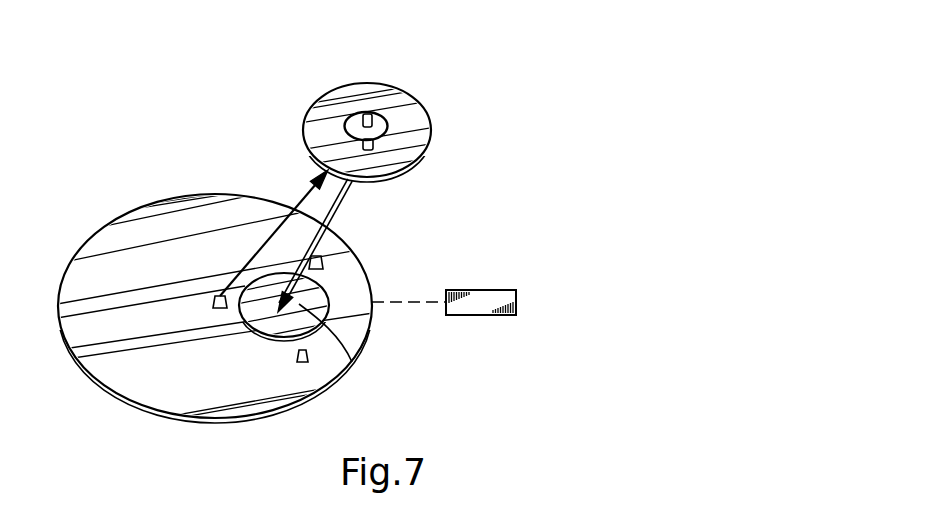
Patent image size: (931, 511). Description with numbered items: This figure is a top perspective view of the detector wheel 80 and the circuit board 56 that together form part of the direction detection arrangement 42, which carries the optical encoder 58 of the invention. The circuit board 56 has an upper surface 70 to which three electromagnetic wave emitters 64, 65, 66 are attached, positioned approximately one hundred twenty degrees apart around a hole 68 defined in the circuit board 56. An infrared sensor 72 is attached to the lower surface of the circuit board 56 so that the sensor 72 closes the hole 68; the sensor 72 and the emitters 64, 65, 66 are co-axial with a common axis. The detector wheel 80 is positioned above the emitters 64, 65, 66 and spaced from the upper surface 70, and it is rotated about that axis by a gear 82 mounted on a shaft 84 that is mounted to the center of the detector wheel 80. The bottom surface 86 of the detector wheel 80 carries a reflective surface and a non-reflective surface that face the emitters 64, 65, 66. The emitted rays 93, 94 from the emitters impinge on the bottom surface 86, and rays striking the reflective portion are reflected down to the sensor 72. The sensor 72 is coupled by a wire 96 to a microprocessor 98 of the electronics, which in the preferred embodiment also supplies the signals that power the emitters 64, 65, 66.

The direction detection arrangement 42 is at (486, 168).
The circuit board 56 is at (60, 312).
The optical encoder 58 is at (105, 200).
The electromagnetic wave emitter 64 is at (307, 362).
The electromagnetic wave emitter 65 is at (217, 296).
The electromagnetic wave emitter 66 is at (360, 256).
The hole 68 is at (362, 333).
The upper surface 70 is at (115, 370).
The infrared sensor 72 is at (352, 361).
The detector wheel 80 is at (428, 110).
The gear 82 is at (312, 105).
The shaft 84 is at (365, 117).
The bottom surface 86 is at (389, 173).
The emitted ray 93 is at (342, 192).
The emitted ray 94 is at (304, 192).
The wire 96 is at (422, 303).
The microprocessor 98 is at (483, 290).